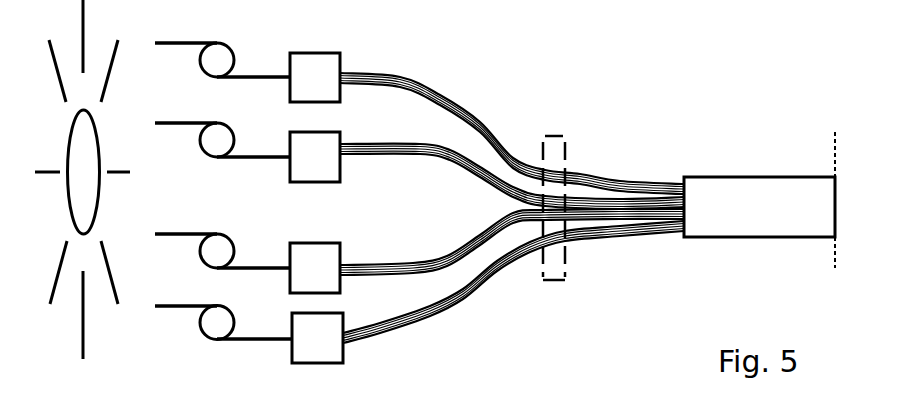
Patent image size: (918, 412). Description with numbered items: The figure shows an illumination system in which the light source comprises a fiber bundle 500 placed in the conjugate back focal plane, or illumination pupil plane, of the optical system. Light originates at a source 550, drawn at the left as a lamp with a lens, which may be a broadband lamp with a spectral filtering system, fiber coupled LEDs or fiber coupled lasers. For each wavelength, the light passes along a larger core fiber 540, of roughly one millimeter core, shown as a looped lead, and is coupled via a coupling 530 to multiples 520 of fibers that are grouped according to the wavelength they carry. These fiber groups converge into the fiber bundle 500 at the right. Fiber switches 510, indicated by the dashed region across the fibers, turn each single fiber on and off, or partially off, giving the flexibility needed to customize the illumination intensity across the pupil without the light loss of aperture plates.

The fiber bundle 500 is at (670, 180).
The fiber switches 510 is at (553, 268).
The multiples of fibers 520 is at (470, 113).
The couplings 530 is at (316, 208).
The larger core fiber 540 is at (187, 43).
The source 550 is at (82, 201).